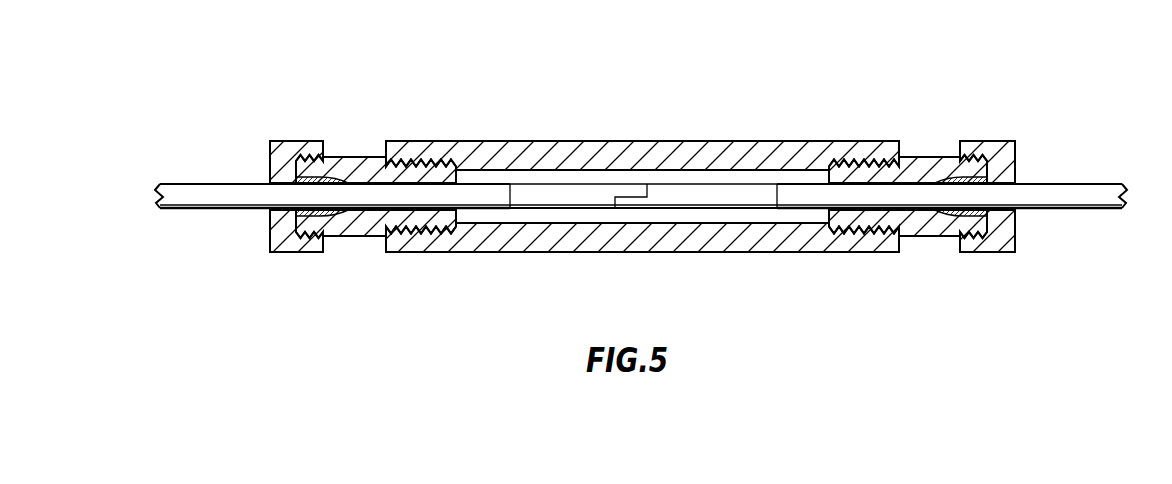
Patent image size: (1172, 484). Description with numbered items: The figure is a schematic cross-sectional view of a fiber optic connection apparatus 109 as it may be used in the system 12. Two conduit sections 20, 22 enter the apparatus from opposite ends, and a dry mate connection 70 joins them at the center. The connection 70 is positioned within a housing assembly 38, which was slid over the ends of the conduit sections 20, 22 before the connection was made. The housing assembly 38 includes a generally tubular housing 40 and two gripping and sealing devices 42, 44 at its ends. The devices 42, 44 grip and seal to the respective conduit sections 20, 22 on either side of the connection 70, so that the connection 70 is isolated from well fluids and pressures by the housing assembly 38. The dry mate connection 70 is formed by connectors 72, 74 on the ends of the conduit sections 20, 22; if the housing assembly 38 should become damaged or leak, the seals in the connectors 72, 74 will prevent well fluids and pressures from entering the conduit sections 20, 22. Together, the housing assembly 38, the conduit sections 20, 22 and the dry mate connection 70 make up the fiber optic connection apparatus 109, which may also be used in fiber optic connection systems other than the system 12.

The system 12 is at (893, 97).
The conduit section 20 is at (175, 183).
The conduit section 22 is at (1104, 184).
The housing assembly 38 is at (747, 141).
The tubular housing 40 is at (788, 254).
The gripping and sealing device 42 is at (318, 141).
The gripping and sealing device 44 is at (1003, 141).
The dry mate connection 70 is at (642, 178).
The connector 72 is at (580, 209).
The connector 74 is at (742, 209).
The fiber optic connection apparatus 109 is at (480, 253).